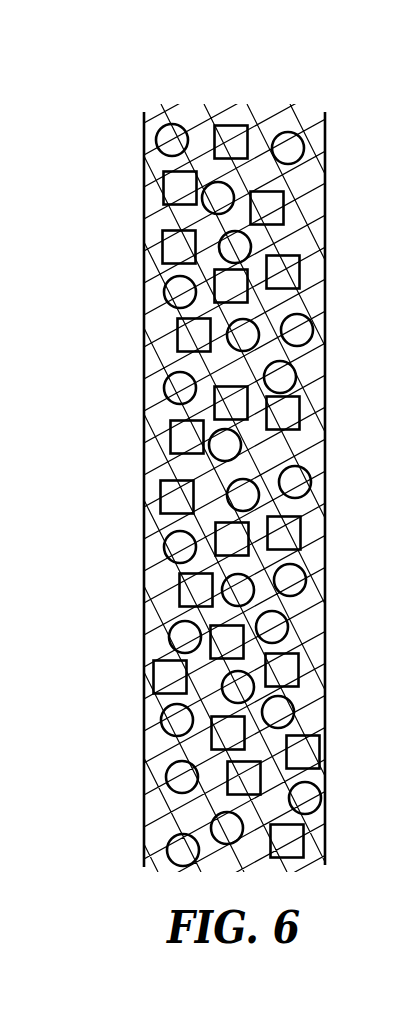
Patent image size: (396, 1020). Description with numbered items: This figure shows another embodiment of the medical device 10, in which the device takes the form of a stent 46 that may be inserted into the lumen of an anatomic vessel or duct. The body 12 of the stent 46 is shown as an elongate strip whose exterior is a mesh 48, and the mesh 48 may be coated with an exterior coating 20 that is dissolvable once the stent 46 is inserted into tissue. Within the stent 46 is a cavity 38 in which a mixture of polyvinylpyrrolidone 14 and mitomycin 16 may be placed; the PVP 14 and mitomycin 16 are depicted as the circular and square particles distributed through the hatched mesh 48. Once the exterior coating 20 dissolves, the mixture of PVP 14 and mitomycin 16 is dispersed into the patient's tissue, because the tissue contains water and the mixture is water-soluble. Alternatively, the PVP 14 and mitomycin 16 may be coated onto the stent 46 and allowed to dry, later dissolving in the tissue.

The medical device 10 is at (118, 208).
The body 12 is at (141, 255).
The polyvinylpyrrolidone (PVP) 14 is at (170, 438).
The mitomycin 16 is at (163, 386).
The exterior coating 20 is at (145, 765).
The cavity 38 is at (267, 104).
The stent 46 is at (122, 640).
The mesh 48 is at (168, 523).